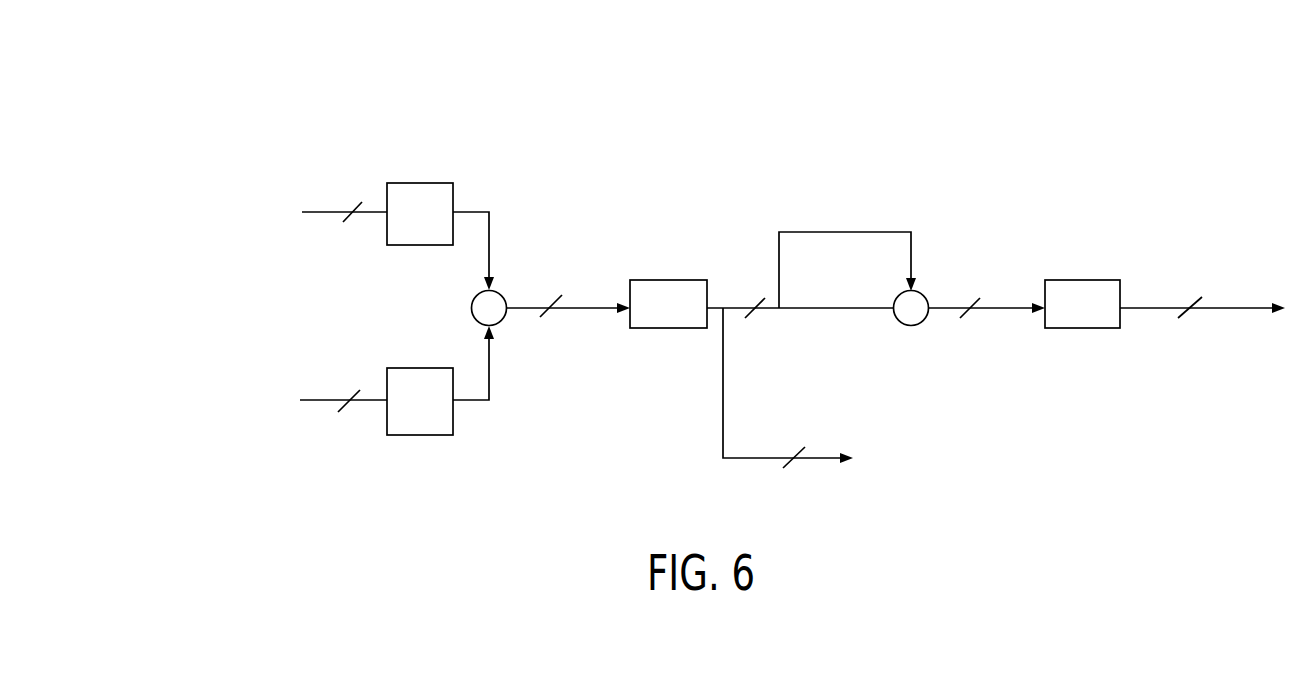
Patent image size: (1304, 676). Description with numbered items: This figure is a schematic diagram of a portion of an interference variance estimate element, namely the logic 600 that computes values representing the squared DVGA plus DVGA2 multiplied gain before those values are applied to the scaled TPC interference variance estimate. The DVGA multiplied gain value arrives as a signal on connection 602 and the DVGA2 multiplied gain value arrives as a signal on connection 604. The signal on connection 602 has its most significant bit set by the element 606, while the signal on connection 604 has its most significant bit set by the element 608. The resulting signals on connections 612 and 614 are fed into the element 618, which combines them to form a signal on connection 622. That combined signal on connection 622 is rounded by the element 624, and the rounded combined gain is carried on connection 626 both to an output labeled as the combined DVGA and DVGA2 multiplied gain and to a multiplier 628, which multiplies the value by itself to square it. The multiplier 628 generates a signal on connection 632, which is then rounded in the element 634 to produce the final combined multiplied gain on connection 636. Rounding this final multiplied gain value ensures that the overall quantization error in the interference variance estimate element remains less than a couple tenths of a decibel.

The logic 600 is at (198, 99).
The connection 602 is at (320, 211).
The connection 604 is at (322, 402).
The element 606 is at (420, 183).
The element 608 is at (425, 435).
The connection 612 is at (489, 235).
The connection 614 is at (489, 370).
The element 618 is at (472, 307).
The connection 622 is at (576, 308).
The element 624 is at (668, 280).
The rounded combined gain output 626 is at (735, 308).
The multiplier 628 is at (911, 326).
The connection 632 is at (993, 308).
The element 634 is at (1080, 328).
The connection 636 is at (1237, 310).